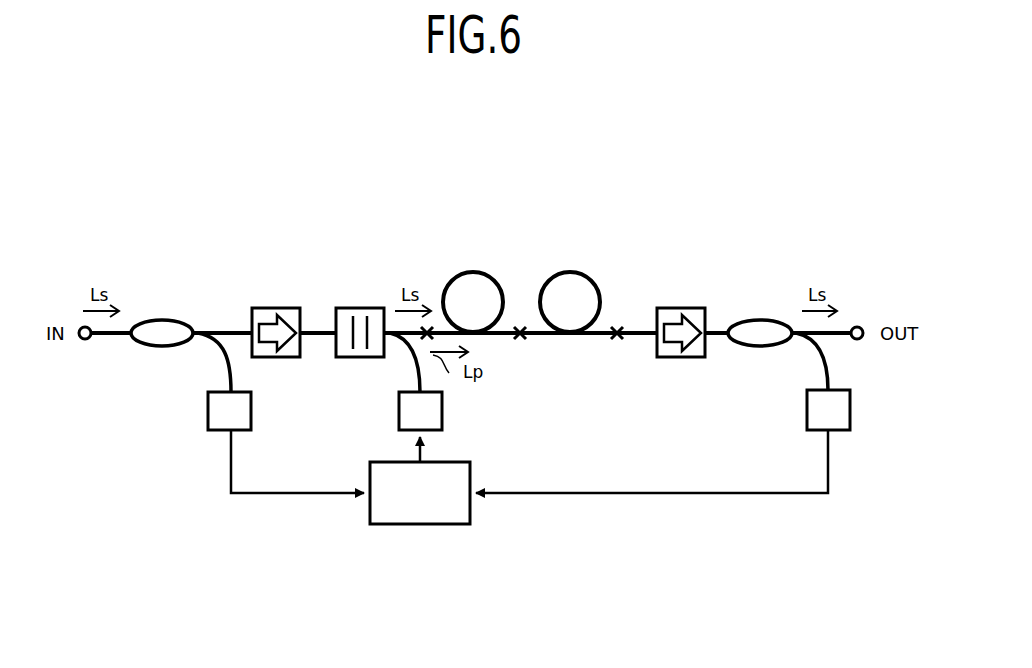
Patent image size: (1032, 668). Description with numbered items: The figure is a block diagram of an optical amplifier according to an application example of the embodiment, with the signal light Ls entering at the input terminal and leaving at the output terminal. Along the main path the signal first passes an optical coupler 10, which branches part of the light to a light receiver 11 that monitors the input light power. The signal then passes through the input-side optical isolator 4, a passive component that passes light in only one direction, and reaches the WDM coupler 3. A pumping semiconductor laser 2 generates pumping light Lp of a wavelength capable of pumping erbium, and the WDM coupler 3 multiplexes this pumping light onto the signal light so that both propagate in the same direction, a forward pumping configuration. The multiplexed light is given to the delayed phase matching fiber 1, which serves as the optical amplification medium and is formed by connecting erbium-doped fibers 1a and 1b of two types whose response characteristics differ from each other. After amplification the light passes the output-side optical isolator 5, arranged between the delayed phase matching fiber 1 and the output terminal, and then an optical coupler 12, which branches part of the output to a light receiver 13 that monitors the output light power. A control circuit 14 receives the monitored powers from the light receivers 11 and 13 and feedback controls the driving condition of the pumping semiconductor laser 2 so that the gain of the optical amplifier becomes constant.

The delayed phase matching fiber 1 is at (522, 247).
The erbium-doped fiber 1a is at (472, 272).
The erbium-doped fiber 1b is at (570, 279).
The pumping semiconductor laser 2 is at (442, 410).
The WDM coupler 3 is at (363, 308).
The optical isolator 4 is at (279, 308).
The optical isolator 5 is at (686, 308).
The optical coupler 10 is at (156, 320).
The light receiver 11 is at (251, 410).
The optical coupler 12 is at (750, 321).
The light receiver 13 is at (807, 415).
The control circuit 14 is at (430, 524).